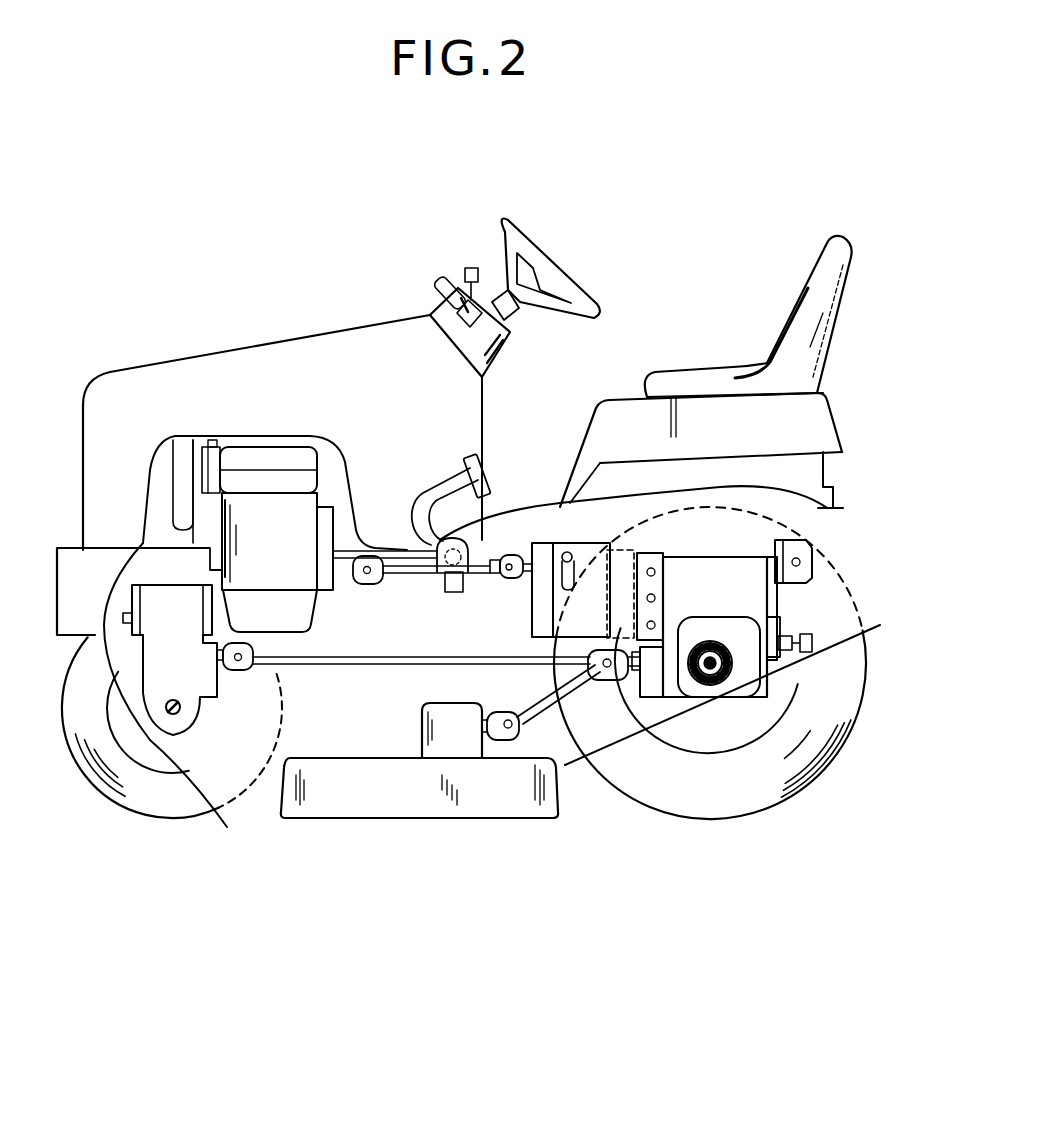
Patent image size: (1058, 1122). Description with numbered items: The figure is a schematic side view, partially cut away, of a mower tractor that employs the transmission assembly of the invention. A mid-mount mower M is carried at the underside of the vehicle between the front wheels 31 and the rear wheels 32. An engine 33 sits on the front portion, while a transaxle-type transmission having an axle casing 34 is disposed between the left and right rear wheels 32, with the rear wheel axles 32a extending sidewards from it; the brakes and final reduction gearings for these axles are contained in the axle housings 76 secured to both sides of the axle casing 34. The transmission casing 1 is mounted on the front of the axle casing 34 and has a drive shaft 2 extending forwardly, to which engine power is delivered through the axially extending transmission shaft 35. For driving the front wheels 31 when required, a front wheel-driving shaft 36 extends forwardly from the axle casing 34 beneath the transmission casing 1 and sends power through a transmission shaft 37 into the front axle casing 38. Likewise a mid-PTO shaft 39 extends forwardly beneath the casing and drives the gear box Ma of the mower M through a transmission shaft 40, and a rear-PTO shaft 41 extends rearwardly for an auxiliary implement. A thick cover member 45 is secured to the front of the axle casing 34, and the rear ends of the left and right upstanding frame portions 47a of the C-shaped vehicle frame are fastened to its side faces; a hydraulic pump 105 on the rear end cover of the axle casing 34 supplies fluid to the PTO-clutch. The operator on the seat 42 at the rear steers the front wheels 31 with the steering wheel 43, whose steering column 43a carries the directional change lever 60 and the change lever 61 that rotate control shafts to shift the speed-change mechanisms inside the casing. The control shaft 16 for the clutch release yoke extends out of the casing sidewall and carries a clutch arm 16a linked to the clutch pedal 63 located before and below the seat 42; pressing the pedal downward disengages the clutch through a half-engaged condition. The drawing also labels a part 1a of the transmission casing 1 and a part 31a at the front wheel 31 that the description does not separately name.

The transmission casing 1 is at (636, 545).
The case side plate 1a is at (548, 618).
The drive shaft 2 is at (533, 507).
The control shaft 16 is at (575, 543).
The clutch arm 16a is at (582, 540).
The front wheels 31 is at (136, 793).
The front wheel axle 31a is at (176, 711).
The rear wheels 32 is at (819, 765).
The rear wheel axles 32a is at (720, 700).
The engine 33 is at (271, 527).
The axle casing 34 is at (703, 567).
The transmission shaft 35 is at (406, 580).
The front wheel-driving shaft 36 is at (673, 618).
The transmission shaft 37 is at (351, 668).
The front axle casing 38 is at (178, 660).
The mid-PTO shaft 39 is at (624, 686).
The transmission shaft 40 is at (543, 720).
The rear-PTO shaft 41 is at (805, 640).
The seat 42 is at (815, 303).
The steering wheel 43 is at (512, 234).
The steering column 43a is at (507, 340).
The cover member 45 is at (657, 700).
The upstanding frame portions 47a is at (627, 597).
The directional change lever 60 is at (440, 282).
The change lever 61 is at (467, 267).
The clutch pedal 63 is at (487, 473).
The axle housings 76 is at (722, 673).
The hydraulic pump 105 is at (795, 553).
The mower M is at (484, 790).
The gear box Ma is at (452, 735).